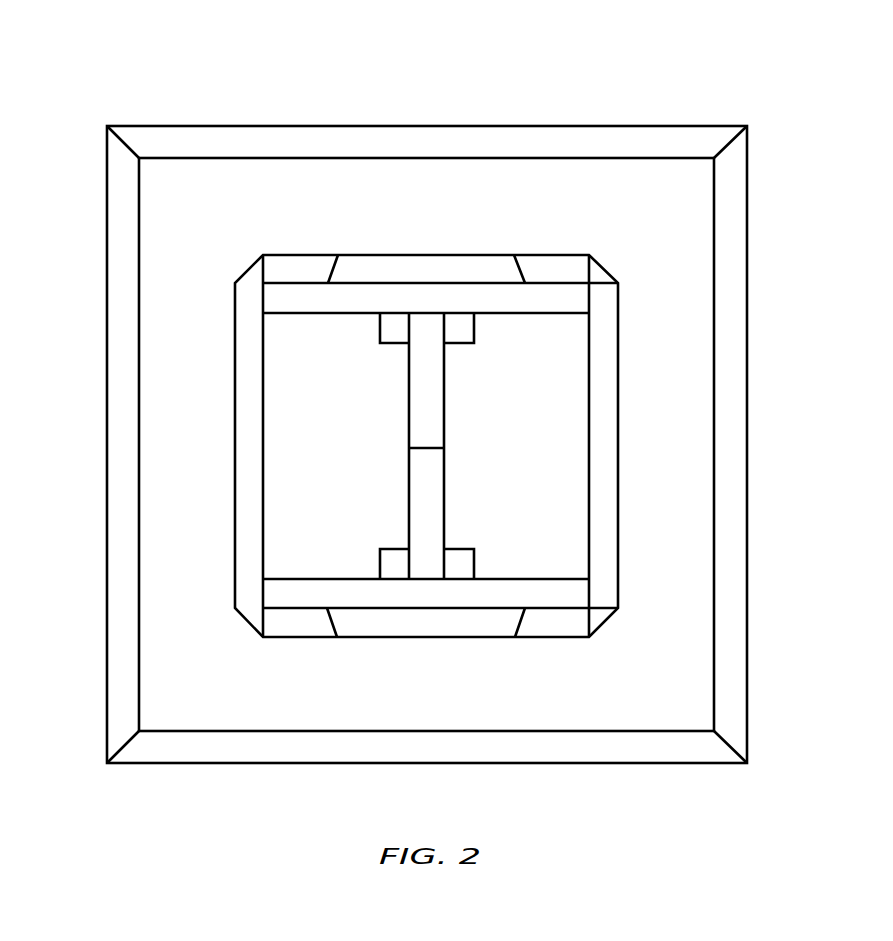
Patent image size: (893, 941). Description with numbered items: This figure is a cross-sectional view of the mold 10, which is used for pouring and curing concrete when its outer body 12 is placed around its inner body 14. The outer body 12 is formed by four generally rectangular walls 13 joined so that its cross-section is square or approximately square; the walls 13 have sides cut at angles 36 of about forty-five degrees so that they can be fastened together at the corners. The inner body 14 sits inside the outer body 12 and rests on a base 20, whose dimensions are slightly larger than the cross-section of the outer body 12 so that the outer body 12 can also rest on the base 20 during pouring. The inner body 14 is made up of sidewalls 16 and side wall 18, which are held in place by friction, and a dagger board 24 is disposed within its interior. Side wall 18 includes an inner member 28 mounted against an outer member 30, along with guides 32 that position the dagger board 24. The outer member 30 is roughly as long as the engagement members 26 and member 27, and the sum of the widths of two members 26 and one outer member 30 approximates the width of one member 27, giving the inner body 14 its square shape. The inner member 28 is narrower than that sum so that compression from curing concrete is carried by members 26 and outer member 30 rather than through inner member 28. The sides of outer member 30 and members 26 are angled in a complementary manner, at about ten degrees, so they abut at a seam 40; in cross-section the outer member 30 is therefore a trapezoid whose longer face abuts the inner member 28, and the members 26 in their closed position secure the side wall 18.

The mold 10 is at (567, 90).
The outer body 12 is at (107, 222).
The walls 13 is at (307, 153).
The inner body 14 is at (235, 382).
The sidewalls 16 is at (248, 487).
The side wall 18 is at (373, 253).
The base 20 is at (177, 218).
The dagger board 24 is at (415, 410).
The engagement members 26 is at (275, 261).
The member 27 is at (603, 373).
The inner member 28 is at (313, 313).
The outer member 30 is at (433, 253).
The guides 32 is at (386, 339).
The angles 36 is at (107, 126).
The seam 40 is at (322, 260).